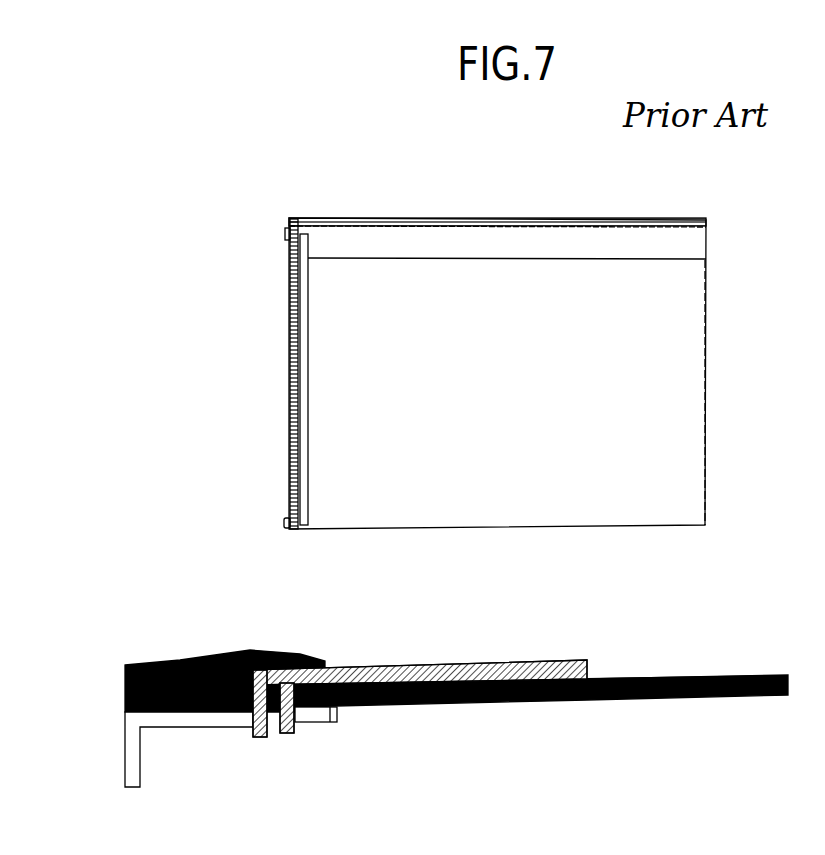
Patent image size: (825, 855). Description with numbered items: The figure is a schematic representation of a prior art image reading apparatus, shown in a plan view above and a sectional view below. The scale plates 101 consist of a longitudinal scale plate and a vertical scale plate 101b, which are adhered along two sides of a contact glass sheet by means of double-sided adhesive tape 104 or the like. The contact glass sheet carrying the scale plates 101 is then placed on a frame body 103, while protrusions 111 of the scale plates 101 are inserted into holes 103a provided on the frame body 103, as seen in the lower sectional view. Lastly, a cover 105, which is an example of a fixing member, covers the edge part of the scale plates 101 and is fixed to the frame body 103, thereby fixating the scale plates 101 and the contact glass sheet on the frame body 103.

The scale plates 101 is at (684, 201).
The vertical scale plate 101b is at (288, 355).
The frame body 103 is at (125, 746).
The holes 103a is at (253, 728).
The double-sided adhesive tape 104 is at (447, 707).
The cover 105 is at (200, 658).
The protrusions 111 is at (287, 734).